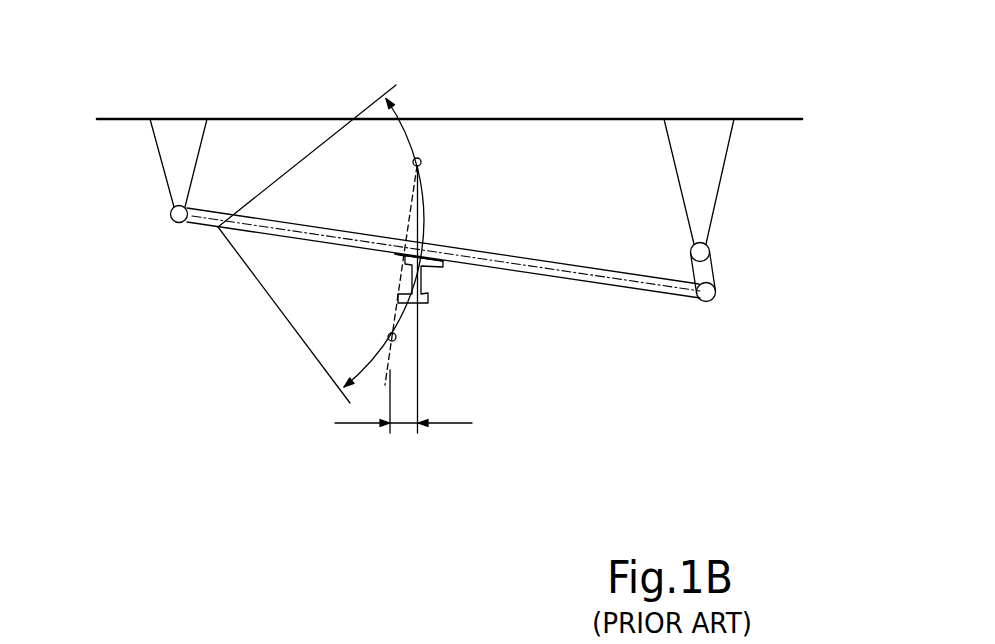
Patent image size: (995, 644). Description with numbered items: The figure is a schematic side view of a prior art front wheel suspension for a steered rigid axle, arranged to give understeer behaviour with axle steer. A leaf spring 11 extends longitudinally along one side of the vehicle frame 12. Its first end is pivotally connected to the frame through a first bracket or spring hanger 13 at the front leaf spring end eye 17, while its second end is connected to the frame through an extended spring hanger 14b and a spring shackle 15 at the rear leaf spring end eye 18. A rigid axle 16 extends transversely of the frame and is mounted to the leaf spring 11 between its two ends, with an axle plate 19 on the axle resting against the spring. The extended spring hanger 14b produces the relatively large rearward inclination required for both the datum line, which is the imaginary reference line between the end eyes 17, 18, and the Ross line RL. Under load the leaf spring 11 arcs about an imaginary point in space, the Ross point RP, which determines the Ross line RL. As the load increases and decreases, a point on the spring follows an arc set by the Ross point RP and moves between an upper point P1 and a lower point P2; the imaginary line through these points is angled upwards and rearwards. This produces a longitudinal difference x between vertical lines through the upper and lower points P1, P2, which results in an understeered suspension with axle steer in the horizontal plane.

The vehicle frame 12 is at (143, 100).
The first bracket or spring hanger 13 is at (170, 160).
The extended spring hanger 14b is at (698, 140).
The front leaf spring end eye 17 is at (175, 222).
The leaf spring 11 is at (642, 278).
The spring shackle 15 is at (707, 270).
The rear leaf spring end eye 18 is at (713, 298).
The rigid axle 16 is at (443, 263).
The axle plate 19 is at (447, 252).
The Ross point RP is at (218, 230).
The Ross line RL is at (323, 238).
The upper point P1 is at (420, 158).
The lower point P2 is at (397, 337).
The longitudinal difference x is at (404, 427).